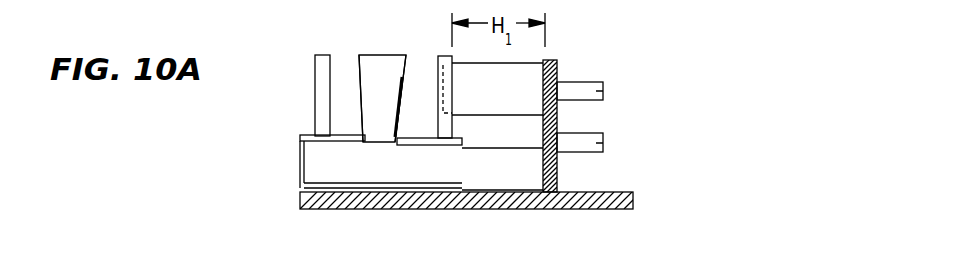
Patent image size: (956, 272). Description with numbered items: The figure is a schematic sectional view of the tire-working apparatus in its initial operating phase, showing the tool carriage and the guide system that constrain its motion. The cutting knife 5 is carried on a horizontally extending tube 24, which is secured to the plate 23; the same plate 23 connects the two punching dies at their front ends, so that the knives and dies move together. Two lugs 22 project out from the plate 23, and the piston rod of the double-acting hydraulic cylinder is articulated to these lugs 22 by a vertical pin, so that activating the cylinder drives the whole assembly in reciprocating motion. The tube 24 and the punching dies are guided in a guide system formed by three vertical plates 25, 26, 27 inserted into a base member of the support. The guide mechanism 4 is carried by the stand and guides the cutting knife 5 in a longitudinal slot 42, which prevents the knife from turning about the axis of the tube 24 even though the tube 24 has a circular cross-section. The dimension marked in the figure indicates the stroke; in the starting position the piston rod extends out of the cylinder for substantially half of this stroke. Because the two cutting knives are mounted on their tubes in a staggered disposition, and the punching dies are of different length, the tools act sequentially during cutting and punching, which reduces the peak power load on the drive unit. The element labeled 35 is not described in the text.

The guide mechanism 4 is at (366, 182).
The cutting knife 5 is at (373, 72).
The lug 22 is at (603, 91).
The plate 23 is at (560, 72).
The tube 24 is at (498, 175).
The vertical plate 25 is at (298, 106).
The vertical plate 26 is at (412, 136).
The vertical plate 27 is at (470, 128).
The side surfaces of tapered post 35 is at (358, 72).
The longitudinal slot 42 is at (330, 144).